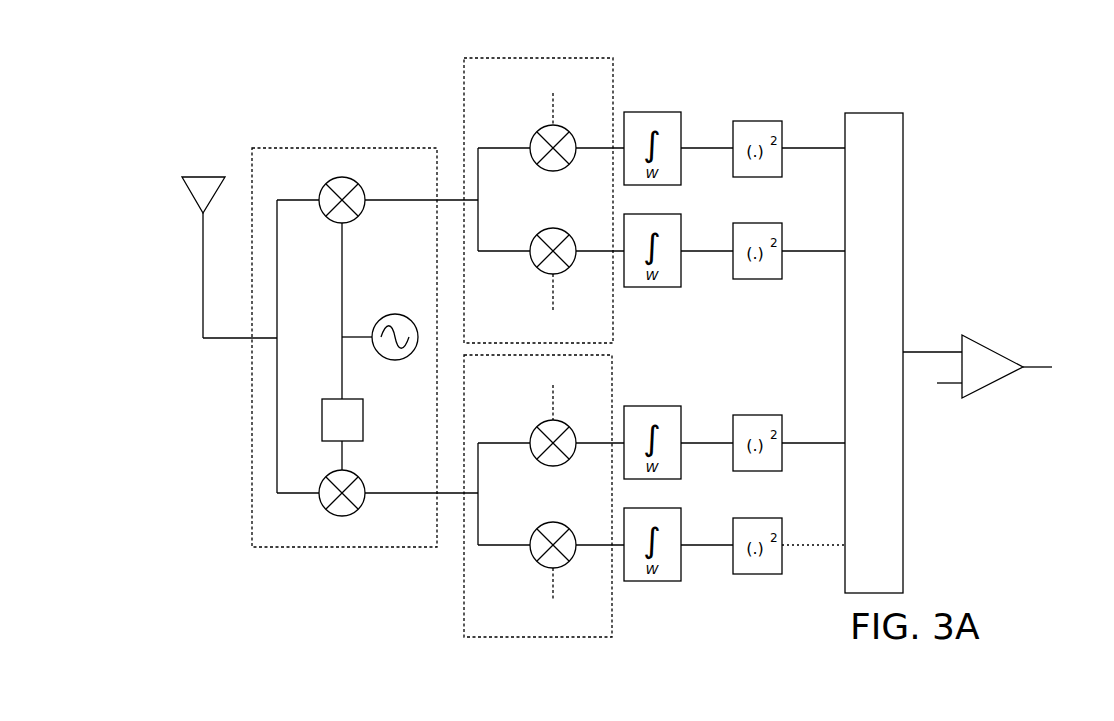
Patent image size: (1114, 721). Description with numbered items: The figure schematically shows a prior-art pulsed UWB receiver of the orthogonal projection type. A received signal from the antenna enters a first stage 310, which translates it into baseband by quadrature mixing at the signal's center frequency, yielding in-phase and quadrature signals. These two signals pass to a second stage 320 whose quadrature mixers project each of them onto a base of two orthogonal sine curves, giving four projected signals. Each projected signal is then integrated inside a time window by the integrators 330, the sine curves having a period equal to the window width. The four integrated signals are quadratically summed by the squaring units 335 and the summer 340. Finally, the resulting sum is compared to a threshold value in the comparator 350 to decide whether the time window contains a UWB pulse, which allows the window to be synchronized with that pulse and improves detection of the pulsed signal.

The first stage 310 is at (318, 148).
The correlator mixer stage 320 is at (463, 102).
The integrators 330 is at (645, 112).
The quadratic summing unit 335 is at (753, 121).
The summer 340 is at (868, 113).
The threshold comparator 350 is at (975, 335).